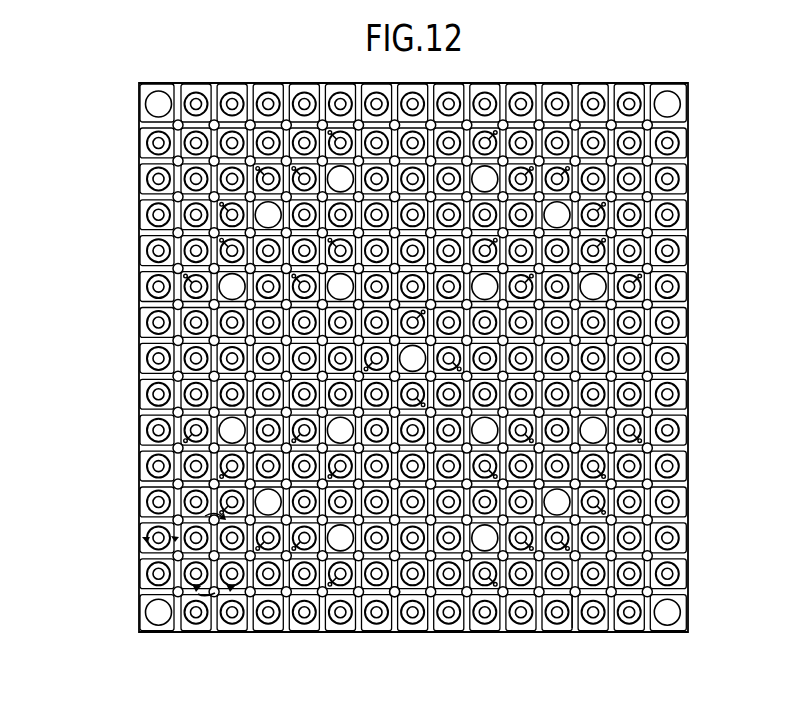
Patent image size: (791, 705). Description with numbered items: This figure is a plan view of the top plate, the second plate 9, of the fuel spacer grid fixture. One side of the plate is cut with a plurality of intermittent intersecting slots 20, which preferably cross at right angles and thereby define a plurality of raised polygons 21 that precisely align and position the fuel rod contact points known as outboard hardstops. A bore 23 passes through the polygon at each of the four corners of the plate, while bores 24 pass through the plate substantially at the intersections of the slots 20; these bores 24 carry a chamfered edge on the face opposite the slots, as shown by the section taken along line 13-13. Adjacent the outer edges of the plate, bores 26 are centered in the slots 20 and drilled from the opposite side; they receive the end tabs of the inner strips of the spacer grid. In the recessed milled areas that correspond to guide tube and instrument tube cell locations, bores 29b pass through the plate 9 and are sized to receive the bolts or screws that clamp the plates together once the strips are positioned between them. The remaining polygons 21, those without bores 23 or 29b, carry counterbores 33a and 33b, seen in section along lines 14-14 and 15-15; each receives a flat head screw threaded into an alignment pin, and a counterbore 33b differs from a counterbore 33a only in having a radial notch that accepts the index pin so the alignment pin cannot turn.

The second plate 9 is at (359, 350).
The section line 13-13 is at (184, 582).
The section line 14-14 is at (136, 548).
The section line 15-15 is at (218, 493).
The intermittent intersecting slots 20 is at (430, 633).
The raised polygons 21 is at (233, 627).
The bore 23 is at (153, 624).
The bore 24 is at (392, 595).
The bores 26 is at (573, 623).
The bores 29b is at (336, 532).
The counterbore 33a is at (521, 613).
The counterbore 33b is at (483, 578).